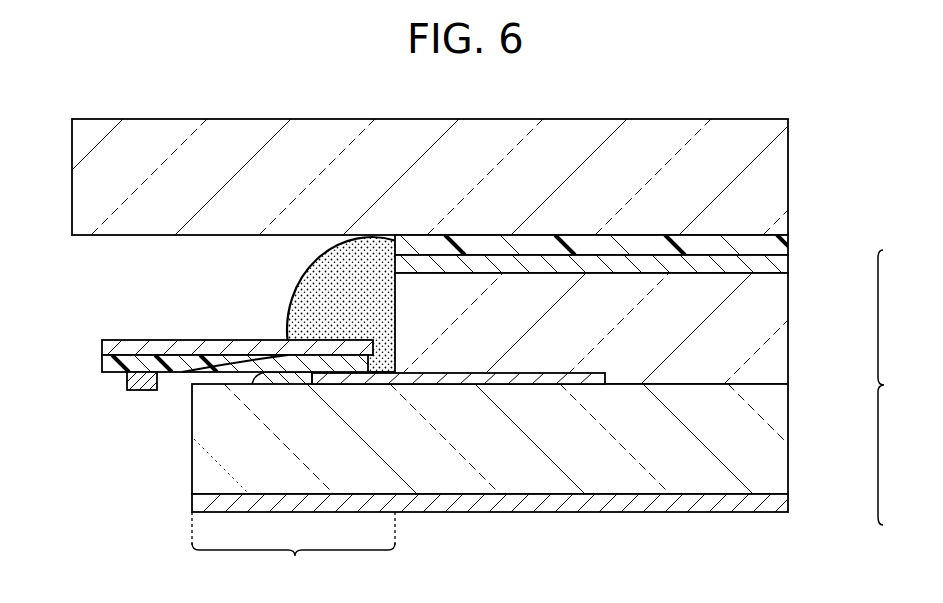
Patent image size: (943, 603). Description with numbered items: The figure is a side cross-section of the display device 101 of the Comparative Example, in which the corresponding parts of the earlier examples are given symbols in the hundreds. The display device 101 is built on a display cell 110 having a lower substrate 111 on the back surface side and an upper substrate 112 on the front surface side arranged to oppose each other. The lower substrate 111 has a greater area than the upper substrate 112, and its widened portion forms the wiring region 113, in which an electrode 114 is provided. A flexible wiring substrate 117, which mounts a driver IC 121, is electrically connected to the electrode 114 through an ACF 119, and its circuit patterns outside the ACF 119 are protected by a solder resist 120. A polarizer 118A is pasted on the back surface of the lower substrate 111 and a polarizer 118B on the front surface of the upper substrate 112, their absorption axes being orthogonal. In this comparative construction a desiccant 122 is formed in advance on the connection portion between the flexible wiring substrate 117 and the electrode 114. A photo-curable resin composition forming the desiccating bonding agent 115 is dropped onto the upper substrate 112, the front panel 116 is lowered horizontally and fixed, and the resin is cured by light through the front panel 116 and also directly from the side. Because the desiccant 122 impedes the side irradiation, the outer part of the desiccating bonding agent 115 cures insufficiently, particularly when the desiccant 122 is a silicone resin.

The display device 101 is at (622, 90).
The display cell 110 is at (901, 387).
The lower substrate 111 is at (755, 452).
The upper substrate 112 is at (758, 333).
The wiring region 113 is at (293, 549).
The electrode 114 is at (592, 373).
The desiccating bonding agent 115 is at (765, 244).
The front panel 116 is at (755, 177).
The flexible wiring substrate 117 is at (108, 346).
The polarizer 118A is at (767, 503).
The polarizer 118B is at (762, 265).
The ACF 119 is at (268, 373).
The solder resist 120 is at (110, 364).
The driver IC 121 is at (128, 382).
The desiccant 122 is at (305, 282).